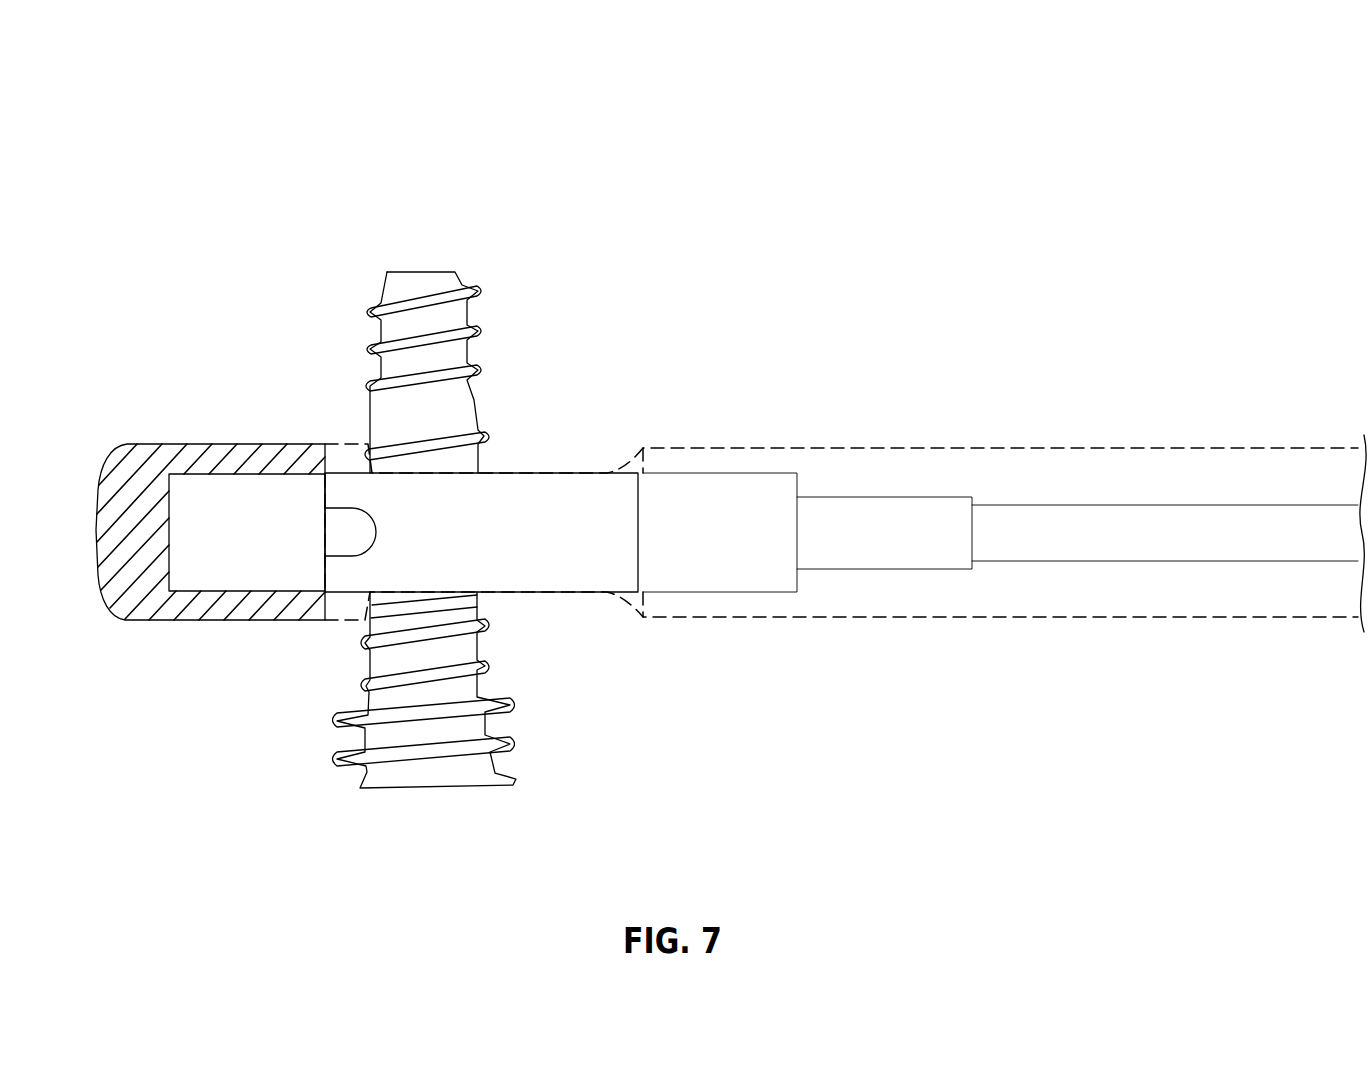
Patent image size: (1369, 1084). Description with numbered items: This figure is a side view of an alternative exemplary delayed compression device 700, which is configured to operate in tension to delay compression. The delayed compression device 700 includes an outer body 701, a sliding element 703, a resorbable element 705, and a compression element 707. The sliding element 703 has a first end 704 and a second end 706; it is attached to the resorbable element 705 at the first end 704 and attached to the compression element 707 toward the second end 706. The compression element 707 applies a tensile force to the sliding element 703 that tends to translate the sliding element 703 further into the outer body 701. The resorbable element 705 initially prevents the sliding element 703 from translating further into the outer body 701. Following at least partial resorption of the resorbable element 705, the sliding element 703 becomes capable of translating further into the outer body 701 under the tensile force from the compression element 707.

The delayed compression device 700 is at (1143, 92).
The outer body 701 is at (810, 617).
The sliding element 703 is at (551, 497).
The first end 704 is at (195, 585).
The resorbable element 705 is at (175, 453).
The second end 706 is at (724, 585).
The compression element 707 is at (1025, 546).